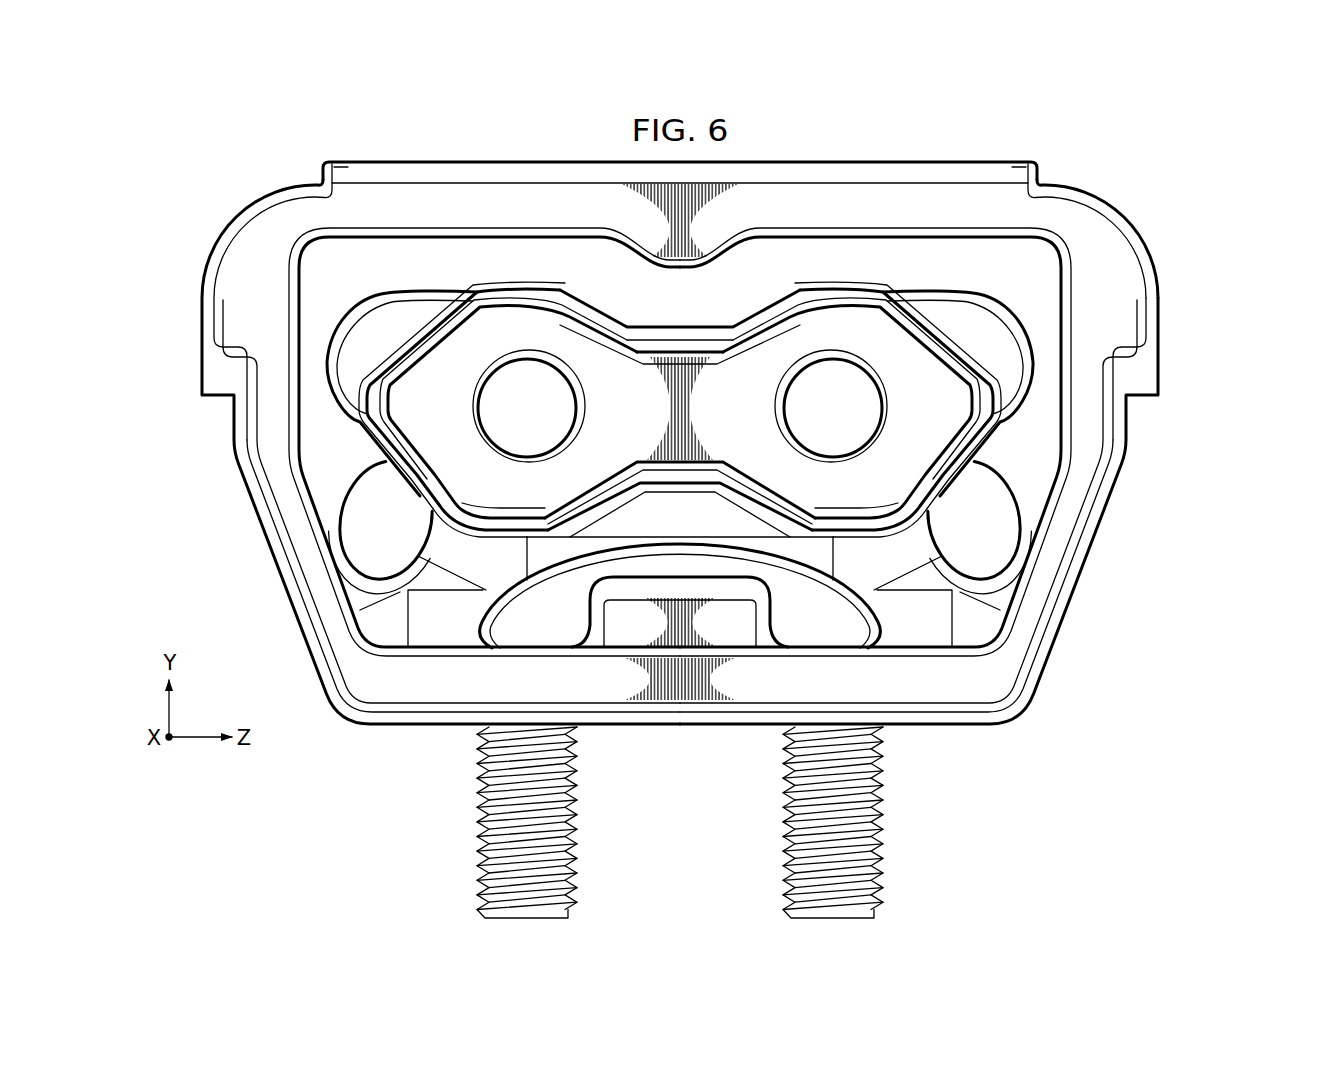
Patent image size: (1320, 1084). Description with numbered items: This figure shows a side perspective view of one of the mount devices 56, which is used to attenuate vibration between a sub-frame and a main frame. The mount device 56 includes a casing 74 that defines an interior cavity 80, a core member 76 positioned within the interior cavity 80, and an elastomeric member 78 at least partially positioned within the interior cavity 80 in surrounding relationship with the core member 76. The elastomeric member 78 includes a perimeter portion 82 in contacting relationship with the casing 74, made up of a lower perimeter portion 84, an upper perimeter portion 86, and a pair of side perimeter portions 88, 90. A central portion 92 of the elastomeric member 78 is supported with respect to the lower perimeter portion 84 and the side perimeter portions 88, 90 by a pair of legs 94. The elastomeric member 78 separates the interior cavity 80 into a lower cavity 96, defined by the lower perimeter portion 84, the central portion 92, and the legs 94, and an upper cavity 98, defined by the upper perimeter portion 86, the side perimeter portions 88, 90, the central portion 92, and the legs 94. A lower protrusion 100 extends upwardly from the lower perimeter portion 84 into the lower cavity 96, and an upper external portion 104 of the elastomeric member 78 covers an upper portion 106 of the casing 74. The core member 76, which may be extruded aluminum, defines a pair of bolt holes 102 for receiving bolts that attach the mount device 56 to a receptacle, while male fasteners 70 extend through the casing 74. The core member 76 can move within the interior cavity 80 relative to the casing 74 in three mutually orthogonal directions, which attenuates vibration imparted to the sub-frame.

The mount device 56 is at (1200, 292).
The male fasteners 70 is at (479, 862).
The casing 74 is at (1116, 509).
The core member 76 is at (637, 378).
The elastomeric member 78 is at (438, 153).
The interior cavity 80 is at (1036, 612).
The perimeter portion 82 is at (1076, 246).
The lower perimeter portion 84 is at (440, 685).
The upper perimeter portion 86 is at (372, 196).
The side perimeter portion 88 is at (272, 443).
The side perimeter portion 90 is at (1090, 442).
The central portion 92 is at (401, 345).
The legs 94 is at (446, 538).
The lower cavity 96 is at (553, 620).
The upper cavity 98 is at (796, 262).
The lower protrusion 100 is at (739, 610).
The bolt holes 102 is at (495, 378).
The upper external portion 104 is at (912, 161).
The upper portion 106 is at (1053, 183).